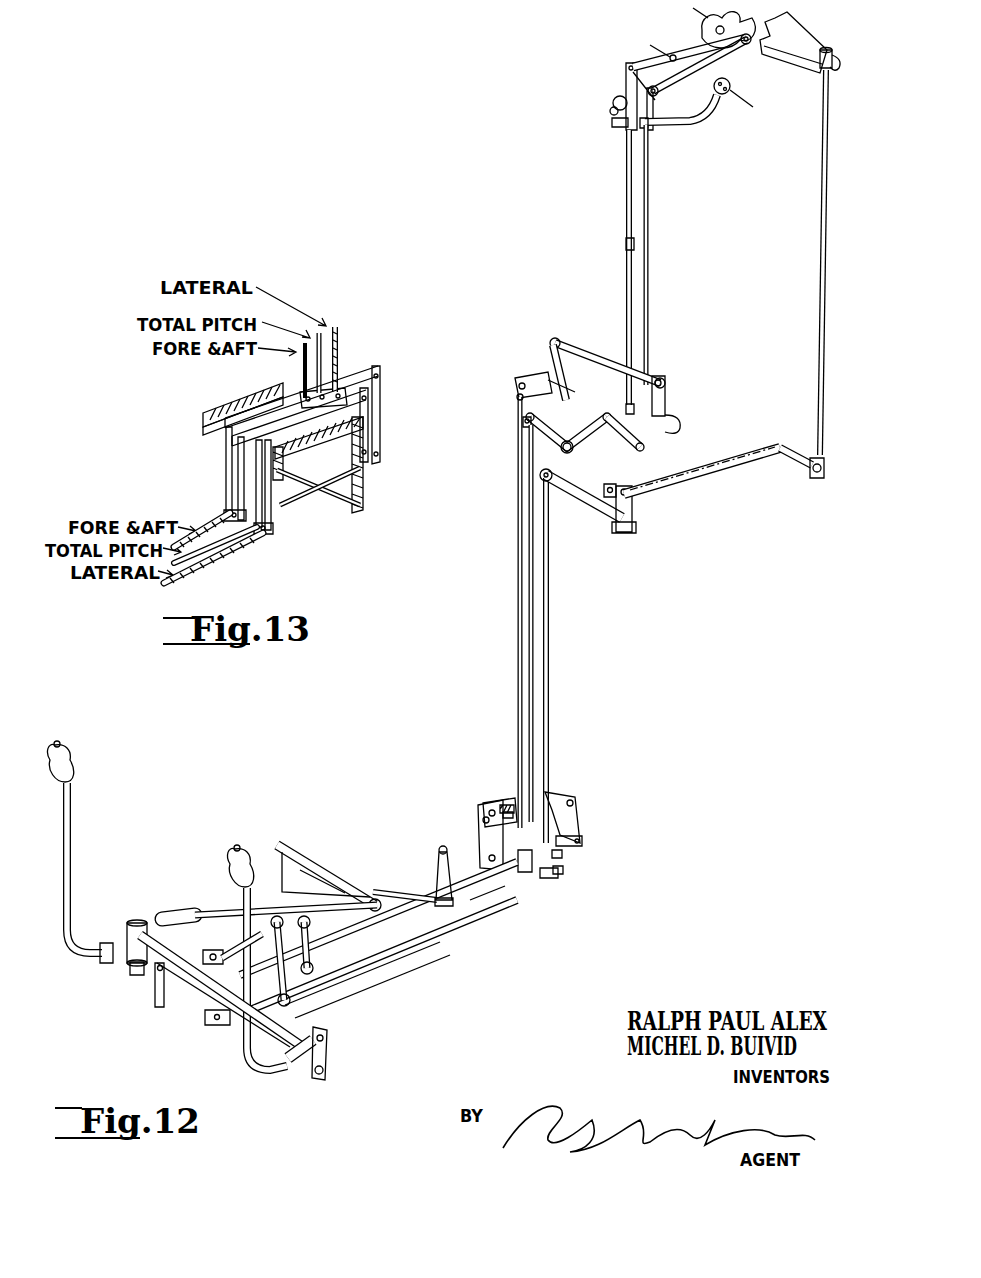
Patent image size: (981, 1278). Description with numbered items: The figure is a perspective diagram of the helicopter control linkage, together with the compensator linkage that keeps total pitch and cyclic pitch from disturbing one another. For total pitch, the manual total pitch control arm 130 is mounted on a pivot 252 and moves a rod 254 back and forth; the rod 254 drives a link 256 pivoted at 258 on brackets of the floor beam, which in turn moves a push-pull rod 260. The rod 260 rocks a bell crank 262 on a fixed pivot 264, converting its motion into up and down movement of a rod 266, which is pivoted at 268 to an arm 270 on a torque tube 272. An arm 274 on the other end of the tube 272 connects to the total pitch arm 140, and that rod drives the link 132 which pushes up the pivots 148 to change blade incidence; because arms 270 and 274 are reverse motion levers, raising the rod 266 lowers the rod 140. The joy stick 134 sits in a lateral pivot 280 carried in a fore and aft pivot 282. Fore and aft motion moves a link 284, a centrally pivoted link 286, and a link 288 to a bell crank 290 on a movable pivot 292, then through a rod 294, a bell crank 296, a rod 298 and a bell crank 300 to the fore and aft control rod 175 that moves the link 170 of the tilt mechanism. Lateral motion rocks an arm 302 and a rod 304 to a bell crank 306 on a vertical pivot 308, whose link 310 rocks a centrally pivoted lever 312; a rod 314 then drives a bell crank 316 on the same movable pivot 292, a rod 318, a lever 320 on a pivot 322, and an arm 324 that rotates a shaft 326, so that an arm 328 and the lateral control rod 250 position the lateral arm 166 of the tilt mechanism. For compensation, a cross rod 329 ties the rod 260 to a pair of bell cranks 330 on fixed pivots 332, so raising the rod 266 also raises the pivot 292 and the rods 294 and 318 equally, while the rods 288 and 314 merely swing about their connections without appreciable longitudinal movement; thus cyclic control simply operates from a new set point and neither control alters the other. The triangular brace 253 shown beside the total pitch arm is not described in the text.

In FIG. 12, the total pitch control arm 130 is at (227, 912).
In FIG. 12, the link 132 is at (693, 52).
In FIG. 12, the joy stick 134 is at (78, 805).
In FIG. 12, the total pitch arm 140 is at (650, 186).
In FIG. 12, the pivots 148 is at (735, 38).
In FIG. 12, the lateral arm 166 is at (797, 65).
In FIG. 12, the link 170 is at (624, 70).
In FIG. 12, the fore and aft control rod 175 is at (627, 252).
In FIG. 12, the lateral control rod 250 is at (822, 190).
In FIG. 12, the pivot 252 is at (275, 842).
In FIG. 12, the triangular brace 253 is at (270, 837).
In FIG. 12, the rod 254 is at (380, 892).
In FIG. 12, the link 256 is at (440, 860).
In FIG. 12, the pivot 258 is at (447, 850).
In FIG. 13, the push-pull rod 260 is at (300, 497).
In FIG. 12, the push-pull rod 260 is at (487, 896).
In FIG. 13, the bell crank 262 is at (372, 406).
In FIG. 12, the bell crank 262 is at (581, 838).
In FIG. 13, the fixed pivot 264 is at (380, 372).
In FIG. 12, the fixed pivot 264 is at (578, 804).
In FIG. 13, the rod 266 is at (338, 335).
In FIG. 12, the rod 266 is at (533, 657).
In FIG. 12, the pivot 268 is at (522, 424).
In FIG. 12, the arm 270 is at (566, 420).
In FIG. 12, the torque tube 272 is at (600, 447).
In FIG. 12, the arm 274 is at (630, 450).
In FIG. 12, the lateral pivot 280 is at (326, 1035).
In FIG. 12, the fore and aft pivot 282 is at (133, 965).
In FIG. 12, the link 284 is at (210, 960).
In FIG. 12, the centrally pivoted link 286 is at (310, 930).
In FIG. 13, the link 288 is at (207, 526).
In FIG. 12, the link 288 is at (377, 946).
In FIG. 13, the bell crank 290 is at (230, 487).
In FIG. 12, the bell crank 290 is at (490, 840).
In FIG. 13, the movable pivot 292 is at (218, 430).
In FIG. 12, the movable pivot 292 is at (486, 815).
In FIG. 13, the rod 294 is at (303, 385).
In FIG. 12, the rod 294 is at (518, 706).
In FIG. 12, the bell crank 296 is at (537, 382).
In FIG. 12, the rod 298 is at (575, 351).
In FIG. 12, the bell crank 300 is at (670, 398).
In FIG. 12, the arm 302 is at (130, 975).
In FIG. 12, the rod 304 is at (222, 1027).
In FIG. 12, the bell crank 306 is at (163, 1000).
In FIG. 12, the vertical pivot 308 is at (320, 995).
In FIG. 12, the link 310 is at (238, 945).
In FIG. 12, the centrally pivoted lever 312 is at (330, 993).
In FIG. 13, the rod 314 is at (245, 550).
In FIG. 12, the rod 314 is at (430, 932).
In FIG. 13, the bell crank 316 is at (268, 533).
In FIG. 12, the bell crank 316 is at (530, 868).
In FIG. 13, the rod 318 is at (340, 360).
In FIG. 12, the rod 318 is at (545, 712).
In FIG. 12, the lever 320 is at (603, 505).
In FIG. 12, the pivot 322 is at (612, 486).
In FIG. 12, the arm 324 is at (640, 515).
In FIG. 12, the shaft 326 is at (719, 483).
In FIG. 12, the arm 328 is at (812, 470).
In FIG. 13, the cross rod 329 is at (335, 497).
In FIG. 12, the cross rod 329 is at (550, 878).
In FIG. 13, the bell cranks 330 is at (235, 407).
In FIG. 12, the bell cranks 330 is at (503, 812).
In FIG. 13, the fixed pivots 332 is at (248, 380).
In FIG. 12, the fixed pivots 332 is at (503, 803).